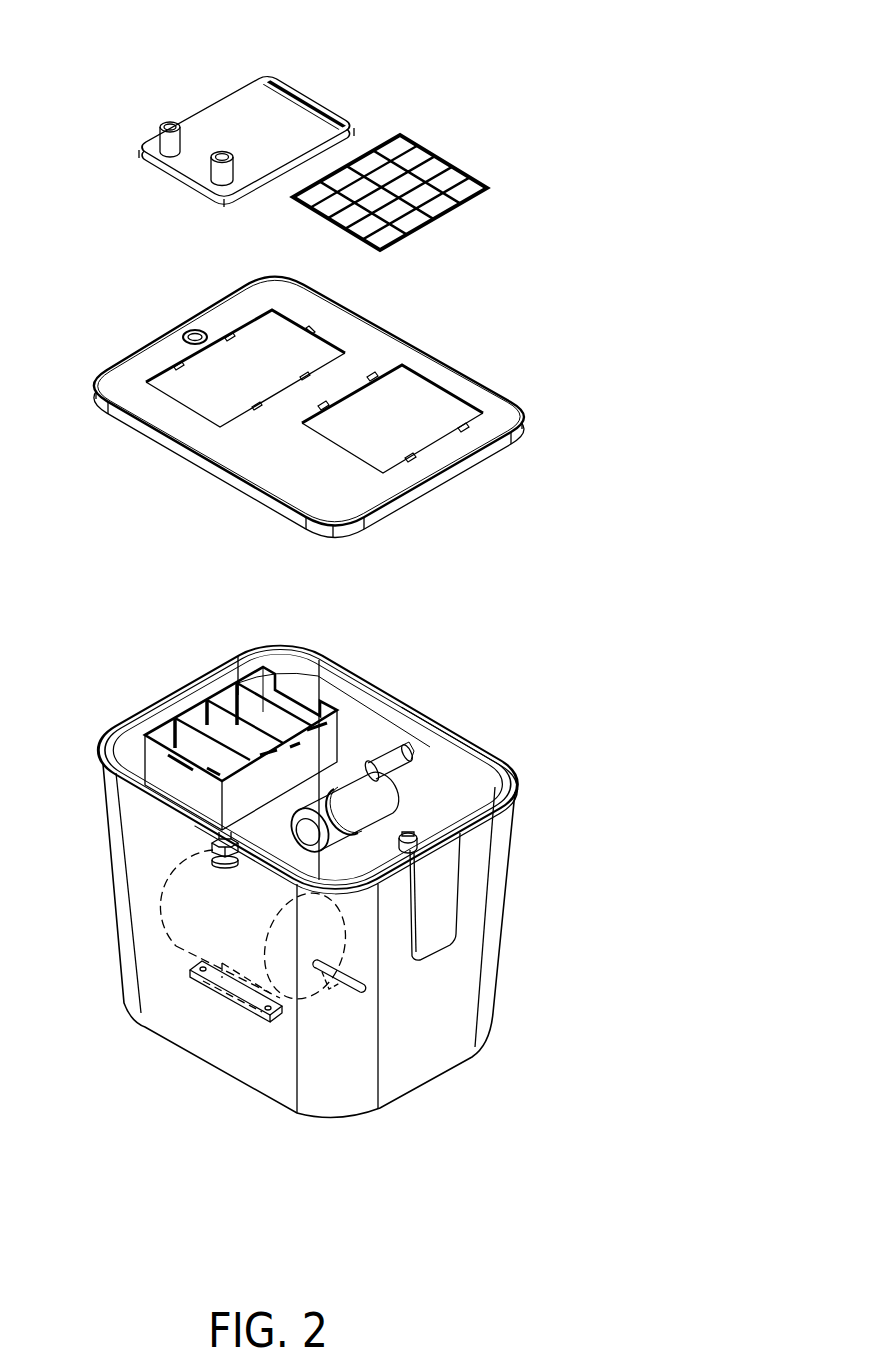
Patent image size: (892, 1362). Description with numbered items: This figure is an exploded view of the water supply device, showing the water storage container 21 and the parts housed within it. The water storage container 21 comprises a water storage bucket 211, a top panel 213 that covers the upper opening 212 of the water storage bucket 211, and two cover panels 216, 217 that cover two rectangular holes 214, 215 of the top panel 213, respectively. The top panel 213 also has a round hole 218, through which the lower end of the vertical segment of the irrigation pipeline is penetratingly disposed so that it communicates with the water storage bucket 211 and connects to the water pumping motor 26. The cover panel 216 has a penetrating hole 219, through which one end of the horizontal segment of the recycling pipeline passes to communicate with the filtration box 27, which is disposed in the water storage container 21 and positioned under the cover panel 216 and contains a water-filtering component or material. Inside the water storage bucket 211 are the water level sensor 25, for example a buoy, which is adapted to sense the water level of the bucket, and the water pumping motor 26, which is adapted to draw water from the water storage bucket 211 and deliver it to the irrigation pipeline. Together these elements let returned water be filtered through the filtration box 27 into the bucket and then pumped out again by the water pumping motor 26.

The water storage container 21 is at (468, 90).
The water storage bucket 211 is at (455, 968).
The upper opening 212 is at (480, 748).
The top panel 213 is at (495, 428).
The rectangular hole 214 is at (165, 378).
The rectangular hole 215 is at (430, 408).
The cover panel 216 is at (217, 125).
The cover panel 217 is at (462, 182).
The round hole 218 is at (194, 329).
The penetrating hole 219 is at (229, 152).
The water level sensor 25 is at (352, 780).
The water pumping motor 26 is at (180, 940).
The filtration box 27 is at (153, 735).